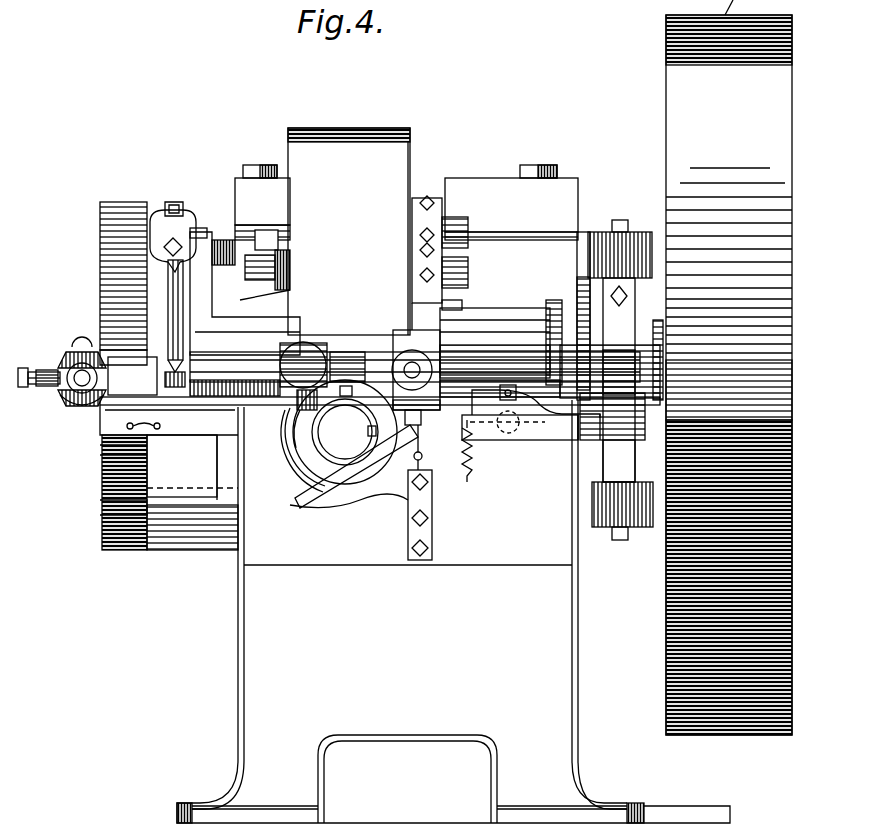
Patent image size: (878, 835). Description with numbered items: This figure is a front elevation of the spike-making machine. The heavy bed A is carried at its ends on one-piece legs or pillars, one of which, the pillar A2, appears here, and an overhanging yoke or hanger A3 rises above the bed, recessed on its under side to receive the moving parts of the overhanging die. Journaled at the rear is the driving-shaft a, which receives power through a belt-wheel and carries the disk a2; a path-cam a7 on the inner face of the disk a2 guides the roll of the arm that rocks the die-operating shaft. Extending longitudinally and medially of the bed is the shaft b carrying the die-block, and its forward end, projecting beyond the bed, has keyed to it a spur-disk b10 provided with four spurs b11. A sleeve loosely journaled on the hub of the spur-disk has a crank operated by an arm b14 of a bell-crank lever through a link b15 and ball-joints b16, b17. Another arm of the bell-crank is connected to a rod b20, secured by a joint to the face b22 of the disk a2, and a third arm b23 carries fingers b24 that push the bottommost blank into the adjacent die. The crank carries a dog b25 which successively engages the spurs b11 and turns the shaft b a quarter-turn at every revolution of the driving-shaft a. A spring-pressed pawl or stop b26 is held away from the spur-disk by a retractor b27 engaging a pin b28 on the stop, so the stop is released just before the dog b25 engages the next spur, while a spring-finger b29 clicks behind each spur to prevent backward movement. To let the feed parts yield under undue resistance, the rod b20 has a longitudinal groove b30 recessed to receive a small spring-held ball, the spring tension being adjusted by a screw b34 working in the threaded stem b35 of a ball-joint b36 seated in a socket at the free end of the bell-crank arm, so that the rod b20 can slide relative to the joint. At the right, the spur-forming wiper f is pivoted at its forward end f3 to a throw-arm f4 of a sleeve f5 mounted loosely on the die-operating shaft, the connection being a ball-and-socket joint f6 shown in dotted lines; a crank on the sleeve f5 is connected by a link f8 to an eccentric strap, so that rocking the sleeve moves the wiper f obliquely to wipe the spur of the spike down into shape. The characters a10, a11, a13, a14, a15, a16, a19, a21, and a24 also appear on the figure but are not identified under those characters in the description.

The bed A is at (453, 611).
The leg or pillar A2 is at (408, 694).
The overhanging yoke or hanger A3 is at (343, 148).
The driving-shaft a is at (660, 322).
The disk a2 is at (100, 215).
The path-cam a7 is at (550, 312).
The rod a10 is at (170, 302).
The lever a11 is at (232, 262).
The casing a13 is at (182, 466).
The gear a14 is at (160, 550).
The bearing a15 is at (160, 388).
The housing a16 is at (152, 270).
The nut a19 is at (177, 204).
The screw a21 is at (186, 222).
The rack a24 is at (428, 200).
The shaft b is at (345, 432).
The spur-disk b10 is at (297, 463).
The spurs b11 is at (348, 360).
The arm b14 is at (215, 470).
The link b15 is at (310, 353).
The ball-joint b16 is at (305, 348).
The ball-joint b17 is at (406, 358).
The rod b20 is at (82, 362).
The face of the cam b22 is at (100, 508).
The third arm b23 is at (158, 432).
The fingers b24 is at (103, 458).
The dog b25 is at (421, 420).
The pawl or stop b26 is at (421, 432).
The retractor b27 is at (303, 477).
The pin b28 is at (432, 512).
The spring-finger b29 is at (378, 495).
The longitudinal groove b30 is at (88, 400).
The screw b34 is at (34, 386).
The threaded stem b35 is at (44, 380).
The ball-joint b36 is at (103, 447).
The wiper f is at (567, 405).
The forward end of the wiper f3 is at (530, 402).
The throw-arm f4 is at (483, 398).
The sleeve f5 is at (512, 318).
The ball-and-socket joint f6 is at (508, 434).
The link f8 is at (617, 455).